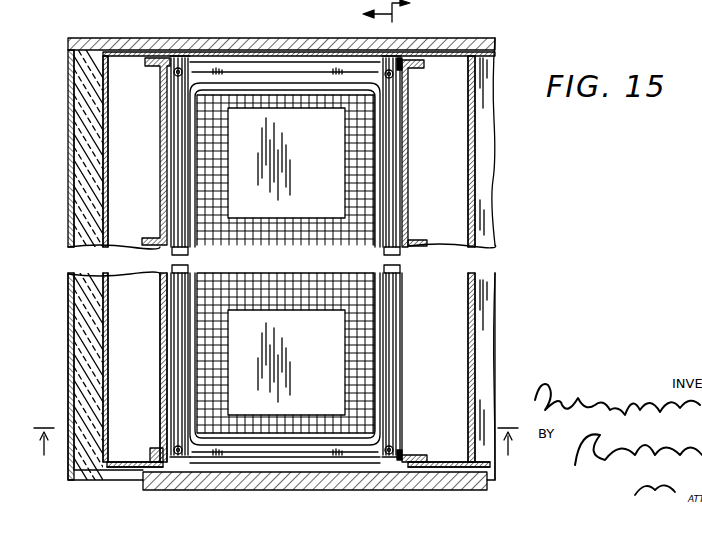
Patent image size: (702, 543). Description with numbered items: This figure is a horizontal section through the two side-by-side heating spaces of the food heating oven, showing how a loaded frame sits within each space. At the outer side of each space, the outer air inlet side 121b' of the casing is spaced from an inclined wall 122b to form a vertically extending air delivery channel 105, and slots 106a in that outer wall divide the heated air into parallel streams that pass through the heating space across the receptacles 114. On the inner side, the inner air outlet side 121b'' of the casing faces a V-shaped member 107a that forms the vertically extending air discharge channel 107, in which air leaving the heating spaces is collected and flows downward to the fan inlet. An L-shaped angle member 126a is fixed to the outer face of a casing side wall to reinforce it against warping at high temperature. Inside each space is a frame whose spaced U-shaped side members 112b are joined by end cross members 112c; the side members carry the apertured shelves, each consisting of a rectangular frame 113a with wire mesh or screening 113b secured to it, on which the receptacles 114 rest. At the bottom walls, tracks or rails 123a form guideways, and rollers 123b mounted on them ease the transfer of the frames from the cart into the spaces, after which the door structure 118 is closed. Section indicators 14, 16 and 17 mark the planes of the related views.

The air delivery channel 105 is at (120, 160).
The slot 106a is at (162, 340).
The air discharge channel 107 is at (443, 329).
The V-shaped member 107a is at (466, 141).
The U-shaped side member 112b is at (391, 191).
The end cross member 112c is at (262, 71).
The frame of shelf 113a is at (297, 126).
The wire mesh or screening 113b is at (367, 118).
The receptacle 114 is at (317, 150).
The door structure 118 is at (332, 488).
The outer air inlet side 121b' is at (142, 151).
The inner air outlet side 121b'' is at (429, 152).
The inclined wall 122b is at (112, 204).
The track or rail 123a is at (172, 253).
The roller 123b is at (173, 440).
The L-shaped angle member 126a is at (442, 236).
The section line 14 is at (272, 449).
The section line 16 is at (360, 14).
The section line 17 is at (415, 6).